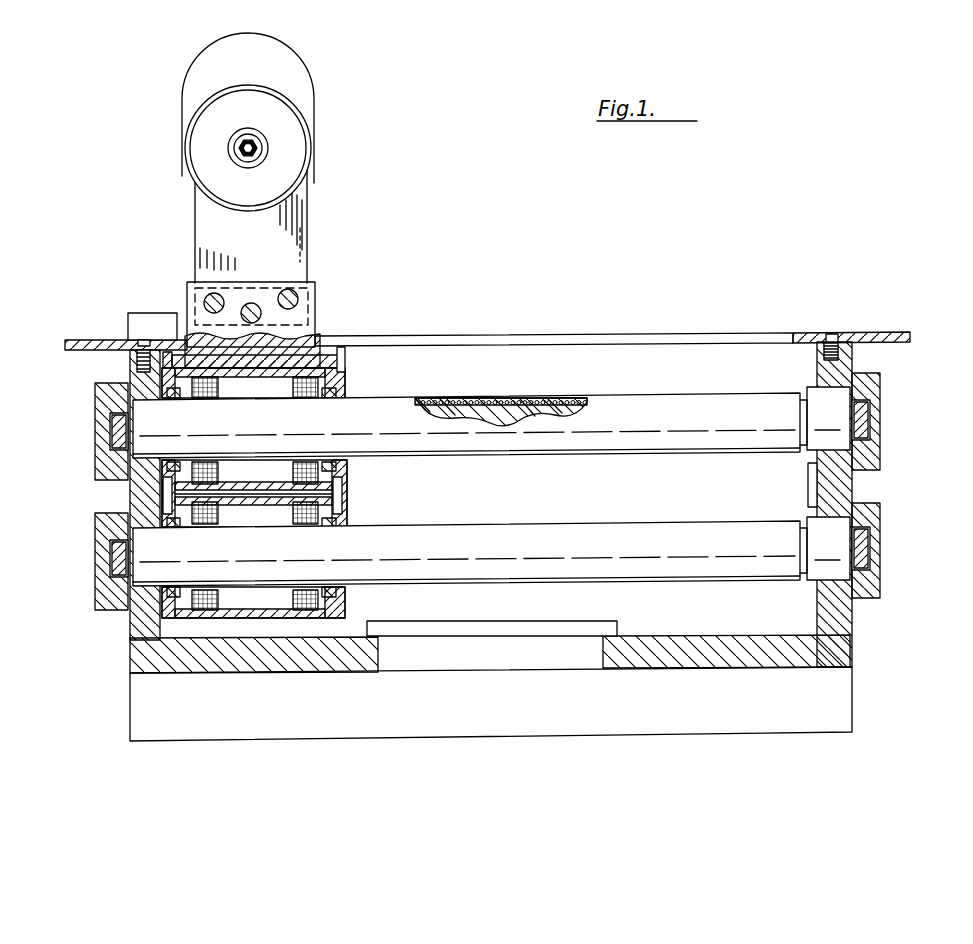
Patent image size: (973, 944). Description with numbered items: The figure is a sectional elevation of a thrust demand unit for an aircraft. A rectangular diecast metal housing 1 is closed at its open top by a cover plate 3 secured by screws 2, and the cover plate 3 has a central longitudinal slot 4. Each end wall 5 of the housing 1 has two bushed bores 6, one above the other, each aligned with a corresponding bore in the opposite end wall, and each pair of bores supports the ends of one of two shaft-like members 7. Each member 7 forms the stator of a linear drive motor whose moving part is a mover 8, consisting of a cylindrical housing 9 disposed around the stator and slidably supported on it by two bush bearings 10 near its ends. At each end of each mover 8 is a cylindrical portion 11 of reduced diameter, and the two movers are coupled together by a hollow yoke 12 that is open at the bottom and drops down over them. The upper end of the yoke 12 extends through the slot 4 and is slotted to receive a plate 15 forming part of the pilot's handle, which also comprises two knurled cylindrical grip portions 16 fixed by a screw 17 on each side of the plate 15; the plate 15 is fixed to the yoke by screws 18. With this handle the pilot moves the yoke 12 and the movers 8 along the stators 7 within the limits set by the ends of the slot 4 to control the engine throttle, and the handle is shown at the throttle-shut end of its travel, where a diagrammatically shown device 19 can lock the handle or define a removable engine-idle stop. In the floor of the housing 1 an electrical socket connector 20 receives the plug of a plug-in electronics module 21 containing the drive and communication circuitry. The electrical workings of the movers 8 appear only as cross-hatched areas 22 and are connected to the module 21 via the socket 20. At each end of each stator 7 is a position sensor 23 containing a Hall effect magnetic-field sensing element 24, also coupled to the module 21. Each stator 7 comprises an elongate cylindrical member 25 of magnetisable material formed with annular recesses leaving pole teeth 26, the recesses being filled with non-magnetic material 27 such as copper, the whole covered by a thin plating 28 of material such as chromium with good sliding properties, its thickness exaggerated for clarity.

The housing 1 is at (737, 637).
The screws 2 is at (833, 333).
The cover plate 3 is at (902, 327).
The central longitudinal slot 4 is at (592, 338).
The end wall 5 is at (130, 636).
The bushed bores 6 is at (812, 473).
The shaft-like member 7 is at (660, 453).
The mover 8 is at (342, 360).
The cylindrical housing 9 is at (293, 333).
The bush bearings 10 is at (185, 441).
The cylindrical portion 11 is at (337, 383).
The hollow yoke 12 is at (343, 485).
The plate 15 is at (307, 230).
The knurled cylindrical grip portions 16 is at (307, 87).
The screw 17 is at (262, 147).
The screws 18 is at (247, 308).
The device 19 is at (152, 313).
The electrical socket connector 20 is at (458, 627).
The plug-in electronics module 21 is at (132, 705).
The cross-hatched areas 22 is at (340, 337).
The position sensor 23 is at (100, 433).
The Hall effect magnetic-field sensing element 24 is at (107, 407).
The elongate cylindrical member 25 is at (587, 403).
The pole teeth 26 is at (488, 398).
The non-magnetic material 27 is at (433, 398).
The thin plating 28 is at (530, 397).